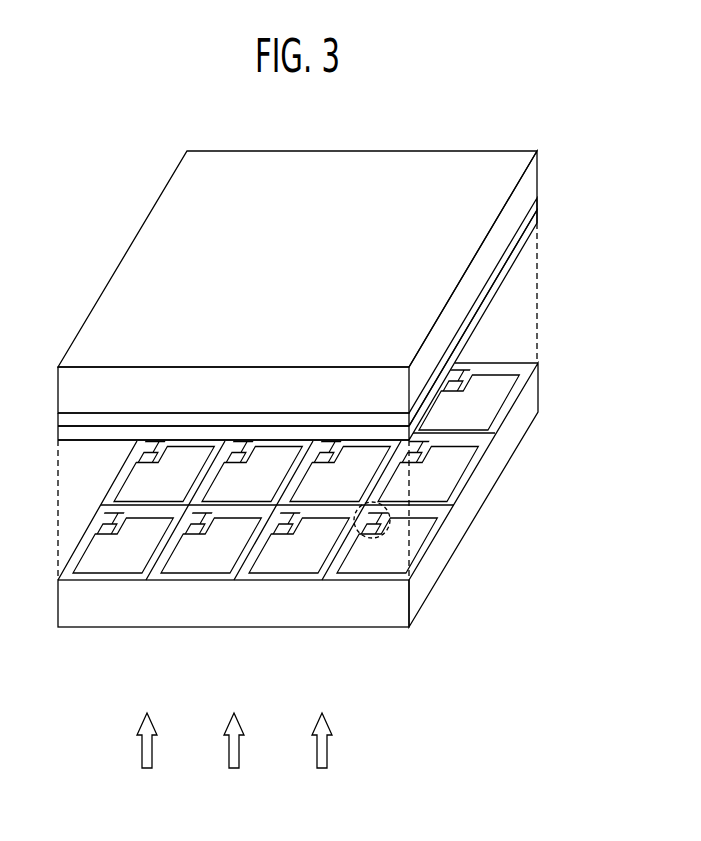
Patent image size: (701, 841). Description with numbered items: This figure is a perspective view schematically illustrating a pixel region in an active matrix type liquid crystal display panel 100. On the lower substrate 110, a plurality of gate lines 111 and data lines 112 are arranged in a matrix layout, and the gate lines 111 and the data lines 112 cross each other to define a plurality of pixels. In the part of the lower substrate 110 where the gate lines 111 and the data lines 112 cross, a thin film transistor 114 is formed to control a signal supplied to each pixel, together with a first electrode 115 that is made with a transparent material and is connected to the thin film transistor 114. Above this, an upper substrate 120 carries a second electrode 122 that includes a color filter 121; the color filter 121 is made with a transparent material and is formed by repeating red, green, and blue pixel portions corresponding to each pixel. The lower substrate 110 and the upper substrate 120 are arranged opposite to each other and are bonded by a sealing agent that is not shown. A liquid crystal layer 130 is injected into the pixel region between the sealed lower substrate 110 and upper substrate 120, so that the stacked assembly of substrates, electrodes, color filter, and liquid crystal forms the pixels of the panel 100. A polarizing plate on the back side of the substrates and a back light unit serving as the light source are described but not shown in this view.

The active matrix type liquid crystal display panel 100 is at (618, 430).
The lower substrate 110 is at (58, 580).
The gate lines 111 is at (312, 506).
The data lines 112 is at (361, 509).
The thin film transistor 114 is at (374, 538).
The first electrode 115 is at (423, 542).
The upper substrate 120 is at (58, 367).
The color filter 121 is at (538, 201).
The second electrode 122 is at (538, 218).
The liquid crystal layer 130 is at (58, 440).